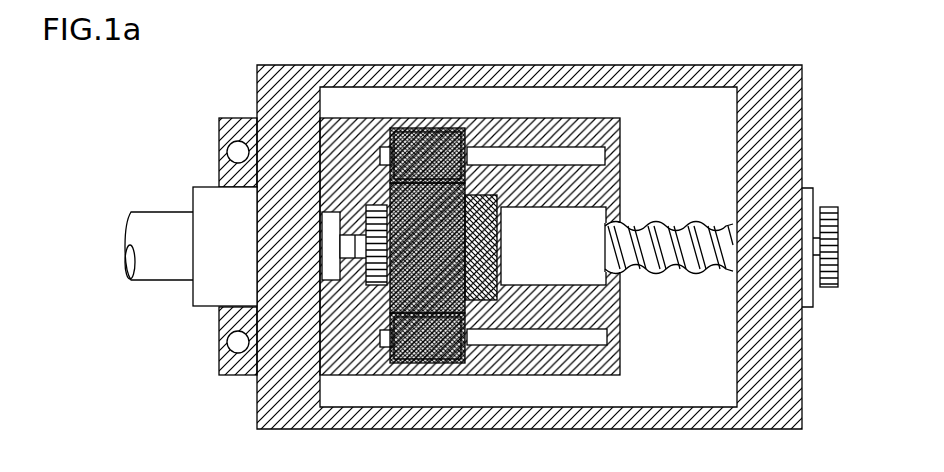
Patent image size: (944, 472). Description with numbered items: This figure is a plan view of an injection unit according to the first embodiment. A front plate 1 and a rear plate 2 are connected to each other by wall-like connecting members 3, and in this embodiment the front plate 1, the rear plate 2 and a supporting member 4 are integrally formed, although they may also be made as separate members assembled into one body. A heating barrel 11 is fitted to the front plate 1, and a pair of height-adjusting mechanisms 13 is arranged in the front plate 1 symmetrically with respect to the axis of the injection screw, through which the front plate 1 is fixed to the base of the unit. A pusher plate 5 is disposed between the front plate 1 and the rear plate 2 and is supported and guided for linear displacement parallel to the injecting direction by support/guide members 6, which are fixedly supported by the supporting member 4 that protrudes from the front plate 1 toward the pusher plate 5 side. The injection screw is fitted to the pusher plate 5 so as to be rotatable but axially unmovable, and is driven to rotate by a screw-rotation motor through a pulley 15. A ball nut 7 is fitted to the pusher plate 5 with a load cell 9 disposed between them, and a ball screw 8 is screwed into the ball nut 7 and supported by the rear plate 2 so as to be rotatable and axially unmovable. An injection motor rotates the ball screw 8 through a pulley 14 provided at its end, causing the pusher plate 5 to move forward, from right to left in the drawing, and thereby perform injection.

The front plate 1 is at (287, 93).
The rear plate 2 is at (778, 95).
The connecting members 3 is at (518, 66).
The supporting member 4 is at (618, 118).
The pusher plate 5 is at (436, 127).
The support/guide members 6 is at (557, 148).
The ball nut 7 is at (580, 285).
The ball screw 8 is at (695, 271).
The load cell 9 is at (497, 287).
The heating barrel 11 is at (165, 213).
The height-adjusting mechanisms 13 is at (231, 146).
The pulley 14 is at (828, 210).
The pulley 15 is at (372, 205).